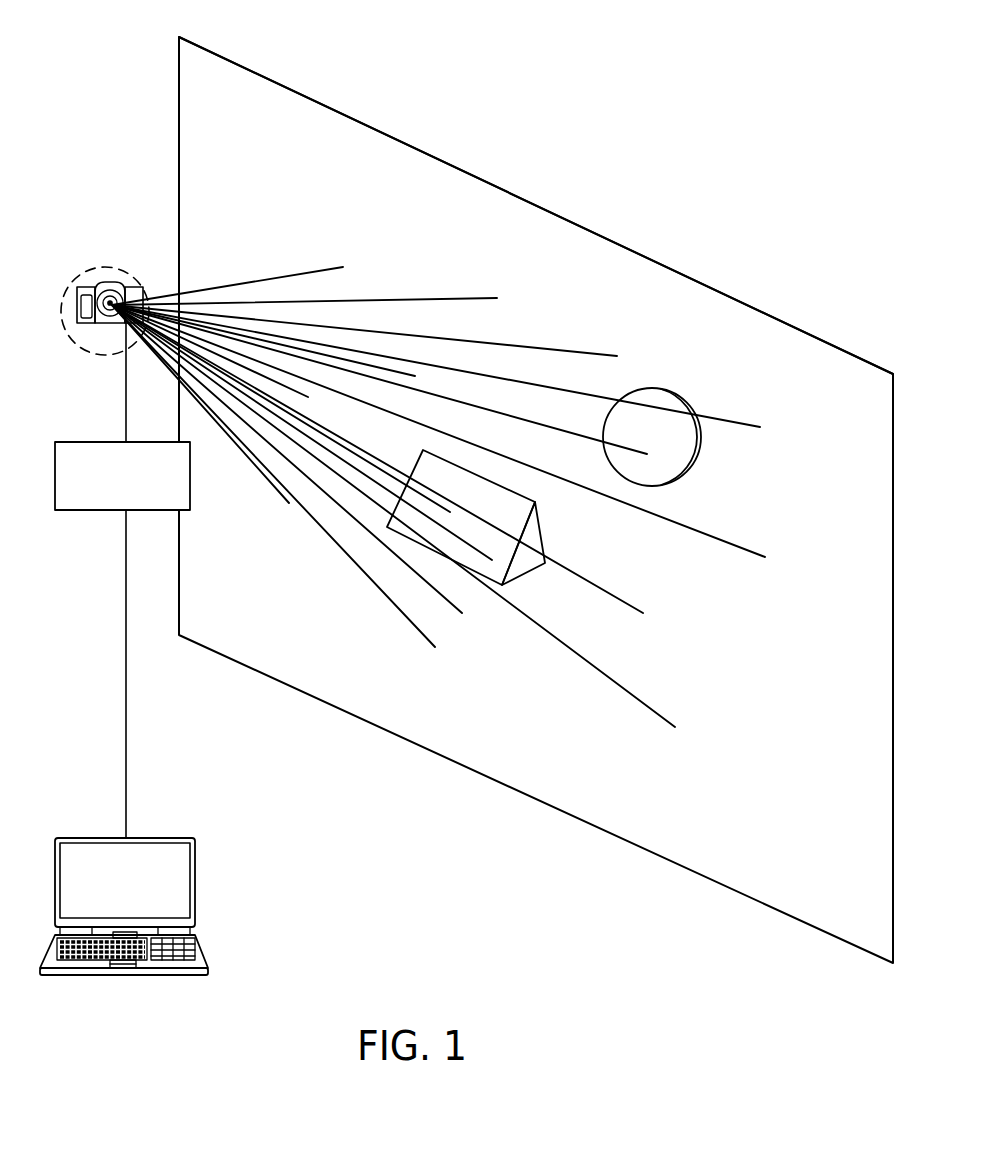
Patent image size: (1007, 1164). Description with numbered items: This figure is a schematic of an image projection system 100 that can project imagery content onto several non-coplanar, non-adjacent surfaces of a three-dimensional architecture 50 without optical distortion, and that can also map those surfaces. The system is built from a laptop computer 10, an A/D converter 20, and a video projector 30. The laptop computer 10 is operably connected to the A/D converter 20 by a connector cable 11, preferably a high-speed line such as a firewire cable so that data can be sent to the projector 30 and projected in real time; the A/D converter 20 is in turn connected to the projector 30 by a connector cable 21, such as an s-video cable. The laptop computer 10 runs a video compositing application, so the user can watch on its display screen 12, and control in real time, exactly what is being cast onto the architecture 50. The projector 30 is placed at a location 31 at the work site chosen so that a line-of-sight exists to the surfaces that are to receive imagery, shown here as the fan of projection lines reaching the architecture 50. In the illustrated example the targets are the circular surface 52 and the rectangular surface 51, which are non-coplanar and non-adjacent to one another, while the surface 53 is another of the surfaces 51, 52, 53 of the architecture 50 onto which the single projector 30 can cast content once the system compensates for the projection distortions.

The image projection system 100 is at (642, 160).
The laptop computer 10 is at (147, 879).
The connector cable 11 is at (127, 720).
The display screen 12 is at (152, 850).
The A/D converter 20 is at (72, 512).
The connector cable 21 is at (125, 398).
The video projector 30 is at (84, 288).
The location 31 is at (122, 264).
The three-dimensional architecture 50 is at (745, 300).
The rectangular surface 51 is at (518, 518).
The circular surface 52 is at (684, 465).
The surface 53 is at (480, 212).